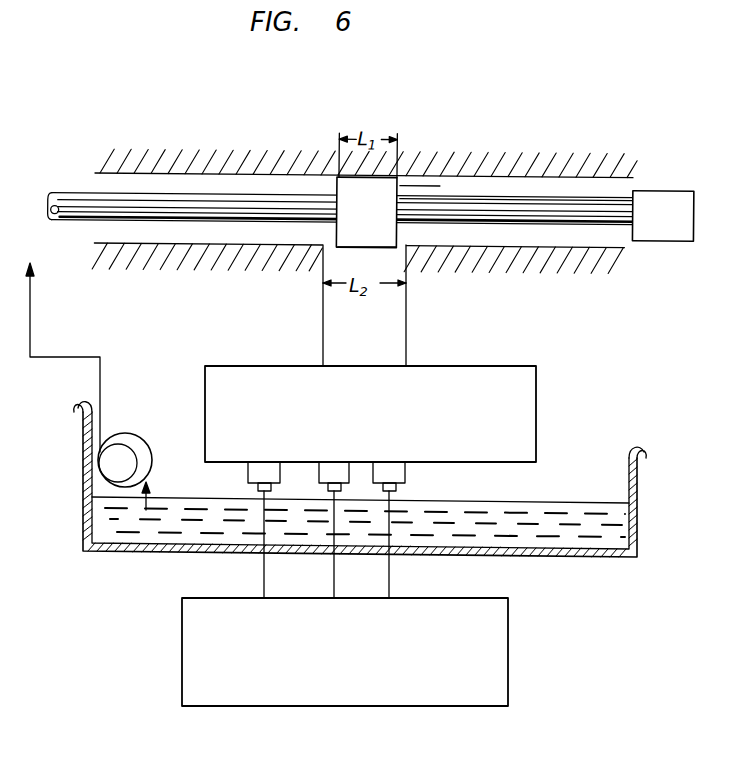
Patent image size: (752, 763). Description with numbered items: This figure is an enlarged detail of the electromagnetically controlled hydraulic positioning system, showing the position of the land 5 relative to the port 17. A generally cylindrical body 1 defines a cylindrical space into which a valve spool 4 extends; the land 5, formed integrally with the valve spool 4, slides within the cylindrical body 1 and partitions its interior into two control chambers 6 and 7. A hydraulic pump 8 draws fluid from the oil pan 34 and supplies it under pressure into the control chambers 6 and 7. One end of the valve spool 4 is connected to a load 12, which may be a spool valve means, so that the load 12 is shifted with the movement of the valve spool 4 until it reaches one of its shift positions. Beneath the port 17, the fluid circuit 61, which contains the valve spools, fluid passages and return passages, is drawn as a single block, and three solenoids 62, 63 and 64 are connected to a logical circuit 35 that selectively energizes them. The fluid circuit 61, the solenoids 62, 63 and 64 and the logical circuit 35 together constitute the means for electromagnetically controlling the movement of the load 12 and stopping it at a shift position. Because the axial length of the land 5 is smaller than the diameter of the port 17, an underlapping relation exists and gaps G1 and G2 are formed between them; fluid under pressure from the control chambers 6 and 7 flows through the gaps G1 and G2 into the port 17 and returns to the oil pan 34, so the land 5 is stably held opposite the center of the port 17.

The cylindrical body 1 is at (425, 172).
The valve spool 4 is at (530, 207).
The land 5 is at (346, 190).
The control chamber 6 is at (147, 180).
The control chamber 7 is at (463, 185).
The hydraulic pump 8 is at (130, 461).
The load 12 is at (657, 198).
The port 17 is at (343, 249).
The oil pan 34 is at (636, 490).
The logical circuit 35 is at (503, 630).
The fluid circuit 61 is at (536, 392).
The solenoid 62 is at (250, 476).
The solenoid 63 is at (321, 470).
The solenoid 64 is at (408, 468).
The gap G1 is at (300, 257).
The gap G2 is at (407, 246).